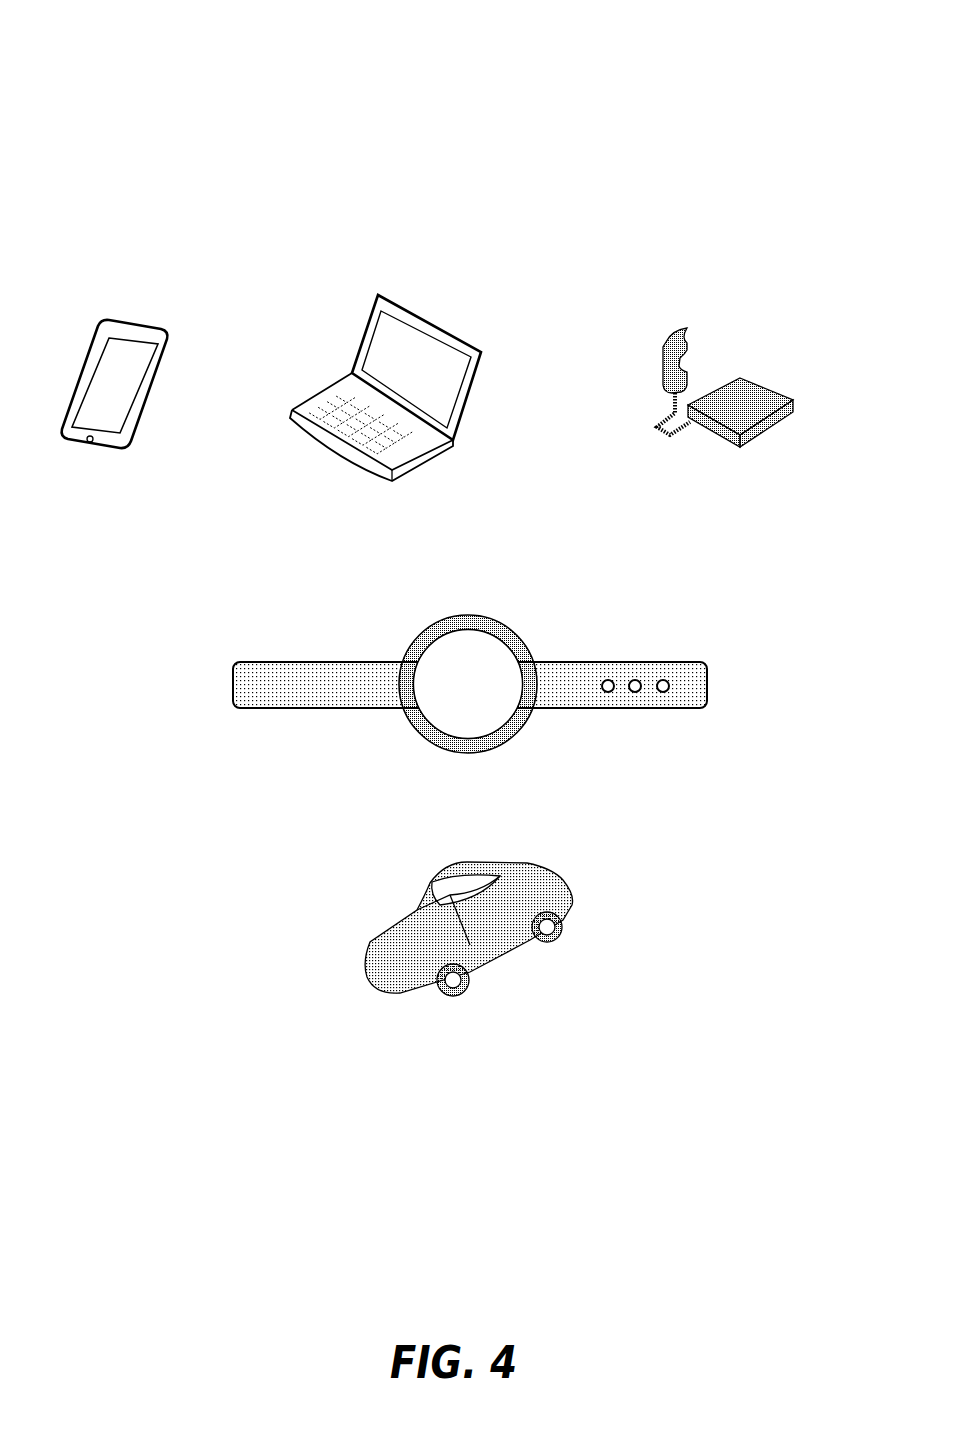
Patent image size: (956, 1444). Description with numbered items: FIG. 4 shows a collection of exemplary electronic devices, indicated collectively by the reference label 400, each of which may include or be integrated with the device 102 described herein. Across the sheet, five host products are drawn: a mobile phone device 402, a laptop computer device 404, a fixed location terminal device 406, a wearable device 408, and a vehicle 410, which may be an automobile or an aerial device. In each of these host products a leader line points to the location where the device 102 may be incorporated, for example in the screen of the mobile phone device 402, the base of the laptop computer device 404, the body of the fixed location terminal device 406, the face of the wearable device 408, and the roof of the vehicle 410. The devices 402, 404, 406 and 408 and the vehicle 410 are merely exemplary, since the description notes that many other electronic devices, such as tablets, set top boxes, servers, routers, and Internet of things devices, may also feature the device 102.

The example operating environment 400 is at (135, 34).
The mobile phone device 402 is at (127, 370).
The laptop computer device 404 is at (437, 325).
The fixed location terminal device 406 is at (670, 348).
The wearable device 408 is at (587, 662).
The vehicle 410 is at (563, 878).
The device 102 is at (112, 430).